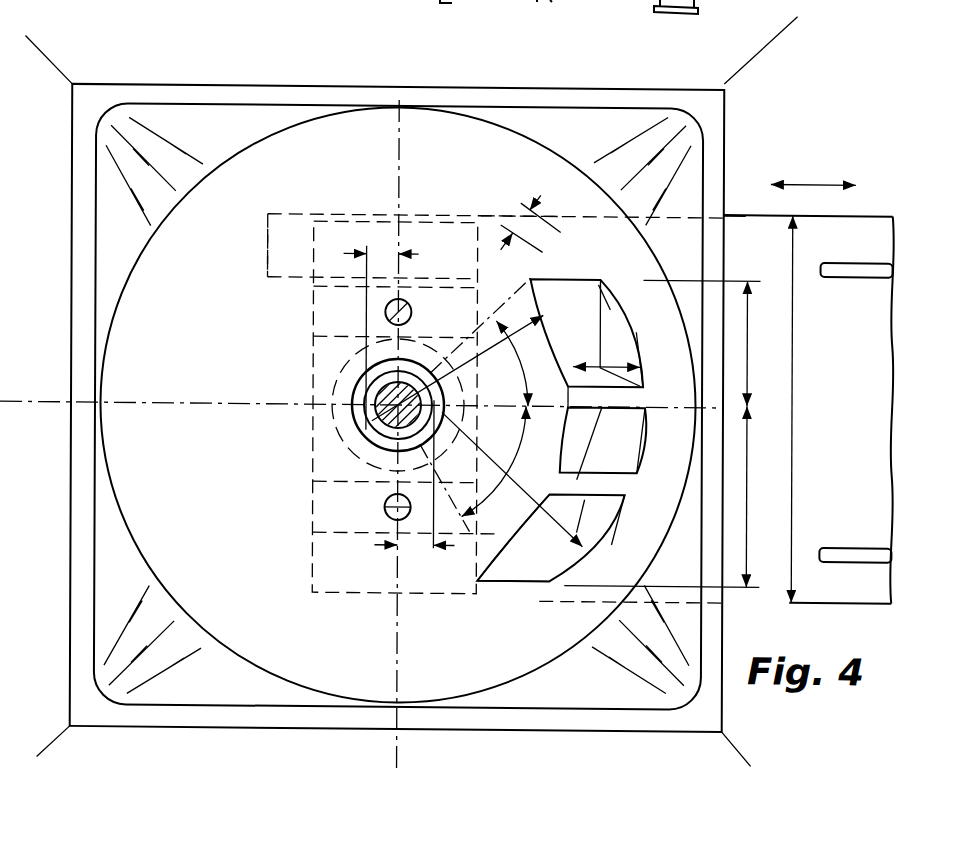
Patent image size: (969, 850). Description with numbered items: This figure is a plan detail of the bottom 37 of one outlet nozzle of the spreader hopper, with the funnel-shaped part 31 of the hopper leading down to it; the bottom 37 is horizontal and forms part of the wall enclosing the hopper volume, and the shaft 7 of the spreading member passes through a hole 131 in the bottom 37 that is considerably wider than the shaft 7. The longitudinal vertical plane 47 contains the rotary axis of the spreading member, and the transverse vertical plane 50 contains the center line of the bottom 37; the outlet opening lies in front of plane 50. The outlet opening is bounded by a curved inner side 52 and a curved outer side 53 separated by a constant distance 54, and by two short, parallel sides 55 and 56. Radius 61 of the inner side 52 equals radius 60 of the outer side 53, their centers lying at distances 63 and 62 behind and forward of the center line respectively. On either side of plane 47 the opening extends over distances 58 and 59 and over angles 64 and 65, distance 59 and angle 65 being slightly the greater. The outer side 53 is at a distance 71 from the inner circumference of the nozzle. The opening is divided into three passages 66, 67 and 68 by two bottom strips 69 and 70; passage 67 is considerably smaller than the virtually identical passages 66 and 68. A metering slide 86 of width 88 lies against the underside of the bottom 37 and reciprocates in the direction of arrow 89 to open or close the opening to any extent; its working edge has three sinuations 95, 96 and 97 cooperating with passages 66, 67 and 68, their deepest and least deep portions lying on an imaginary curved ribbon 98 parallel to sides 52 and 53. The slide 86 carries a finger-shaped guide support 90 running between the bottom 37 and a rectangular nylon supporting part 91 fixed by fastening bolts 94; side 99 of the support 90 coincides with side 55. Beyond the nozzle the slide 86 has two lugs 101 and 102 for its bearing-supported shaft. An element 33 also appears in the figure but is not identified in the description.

The funnel-shaped part 31 is at (146, 49).
The bottom 37 is at (56, 413).
The base plate 33 is at (82, 591).
The transverse vertical plane 50 is at (395, 678).
The shaft 7 is at (372, 420).
The longitudinal vertical plane 47 is at (270, 404).
The hole 131 is at (377, 428).
The finger-shaped support 90 is at (267, 251).
The side 99 is at (266, 293).
The supporting part 91 is at (300, 507).
The fastening bolts 94 is at (385, 312).
The distance 62 is at (385, 253).
The distance 63 is at (412, 546).
The radius 61 is at (512, 344).
The angle 64 is at (518, 351).
The angle 65 is at (547, 431).
The radius 60 is at (550, 497).
The passage part 66 is at (539, 230).
The imaginary curved ribbon 98 is at (515, 213).
The short side 55 is at (583, 276).
The sinuation 95 is at (607, 318).
The distance 54 is at (586, 365).
The bottom strip 69 is at (638, 373).
The distance 71 is at (652, 401).
The passage part 67 is at (580, 404).
The bottom strip 70 is at (603, 444).
The sinuation 96 is at (600, 428).
The curved outer side 53 is at (580, 564).
The passage part 68 is at (613, 501).
The sinuation 97 is at (608, 516).
The curved inner side 52 is at (512, 557).
The short side 56 is at (520, 589).
The distance 58 is at (750, 322).
The distance 59 is at (750, 489).
The width 88 is at (808, 409).
The metering slide 86 is at (743, 230).
The arrow 89 is at (830, 181).
The lug 101 is at (862, 263).
The lug 102 is at (860, 544).